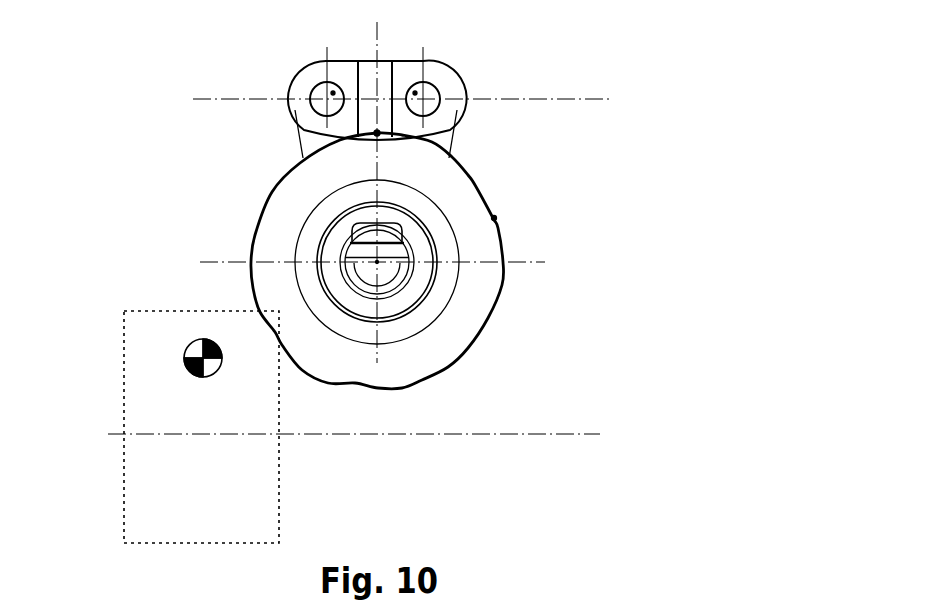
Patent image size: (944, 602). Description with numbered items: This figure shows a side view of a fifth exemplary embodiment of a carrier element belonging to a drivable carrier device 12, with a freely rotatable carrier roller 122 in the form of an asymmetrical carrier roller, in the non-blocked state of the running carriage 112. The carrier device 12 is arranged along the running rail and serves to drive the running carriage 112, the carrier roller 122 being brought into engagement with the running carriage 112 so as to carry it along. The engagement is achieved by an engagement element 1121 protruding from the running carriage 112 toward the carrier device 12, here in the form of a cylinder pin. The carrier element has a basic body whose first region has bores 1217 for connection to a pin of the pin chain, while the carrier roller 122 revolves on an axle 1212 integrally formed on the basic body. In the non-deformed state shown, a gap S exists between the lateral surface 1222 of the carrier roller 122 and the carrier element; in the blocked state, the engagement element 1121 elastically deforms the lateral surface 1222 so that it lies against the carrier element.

The carrier device 12 is at (160, 92).
The gap S is at (377, 133).
The freely rotatable carrier roller 122 is at (298, 193).
The lateral surface 1222 is at (497, 218).
The axle 1212 is at (380, 263).
The bore 1217 is at (333, 93).
The engagement element 1121 is at (196, 351).
The running carriage 112 is at (170, 470).